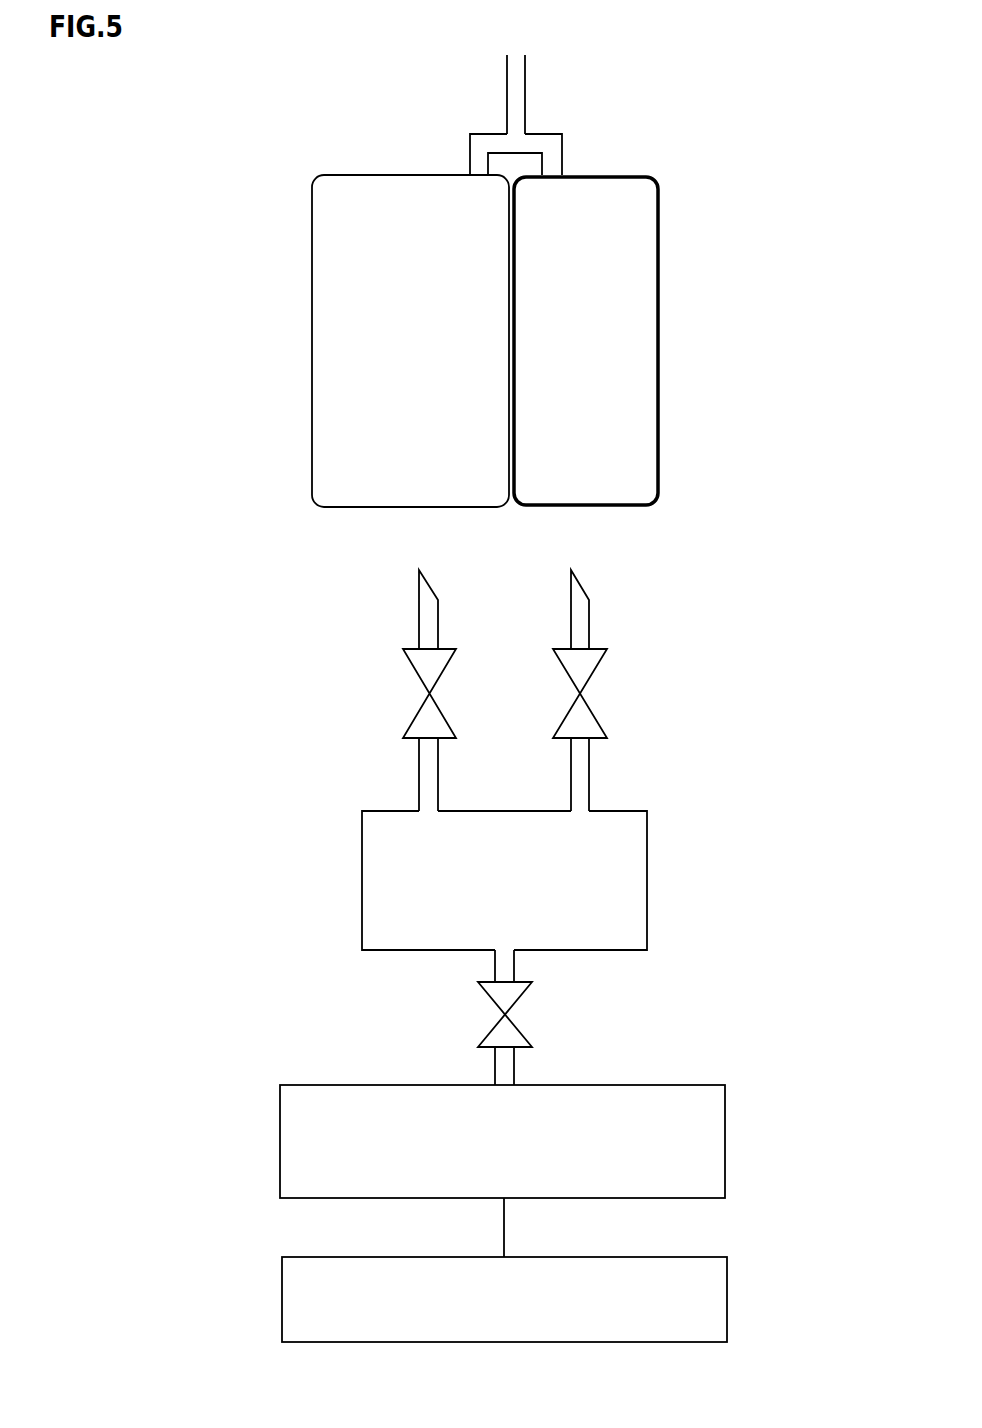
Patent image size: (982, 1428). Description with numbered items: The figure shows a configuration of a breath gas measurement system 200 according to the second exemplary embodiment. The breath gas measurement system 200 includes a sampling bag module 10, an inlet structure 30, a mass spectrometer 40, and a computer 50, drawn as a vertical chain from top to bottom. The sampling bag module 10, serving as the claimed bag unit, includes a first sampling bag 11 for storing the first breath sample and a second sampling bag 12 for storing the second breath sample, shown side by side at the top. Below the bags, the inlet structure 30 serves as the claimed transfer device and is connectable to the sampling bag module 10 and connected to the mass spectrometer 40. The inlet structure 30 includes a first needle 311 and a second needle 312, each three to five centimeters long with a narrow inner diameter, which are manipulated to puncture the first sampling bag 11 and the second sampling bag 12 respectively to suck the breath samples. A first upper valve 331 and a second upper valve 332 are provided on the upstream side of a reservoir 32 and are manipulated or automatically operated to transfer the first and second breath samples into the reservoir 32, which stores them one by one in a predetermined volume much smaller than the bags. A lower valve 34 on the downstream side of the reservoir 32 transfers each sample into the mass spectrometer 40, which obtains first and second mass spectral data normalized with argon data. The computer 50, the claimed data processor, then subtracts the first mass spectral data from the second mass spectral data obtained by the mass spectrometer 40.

The breath gas measurement system 200 is at (782, 97).
The sampling bag module 10 is at (614, 146).
The first sampling bag 11 is at (658, 232).
The second sampling bag 12 is at (312, 232).
The inlet structure 30 is at (660, 582).
The first needle 311 is at (589, 600).
The second needle 312 is at (419, 588).
The first upper valve 331 is at (598, 665).
The second upper valve 332 is at (412, 665).
The reservoir 32 is at (647, 867).
The lower valve 34 is at (527, 993).
The mass spectrometer 40 is at (725, 1122).
The computer 50 is at (727, 1293).